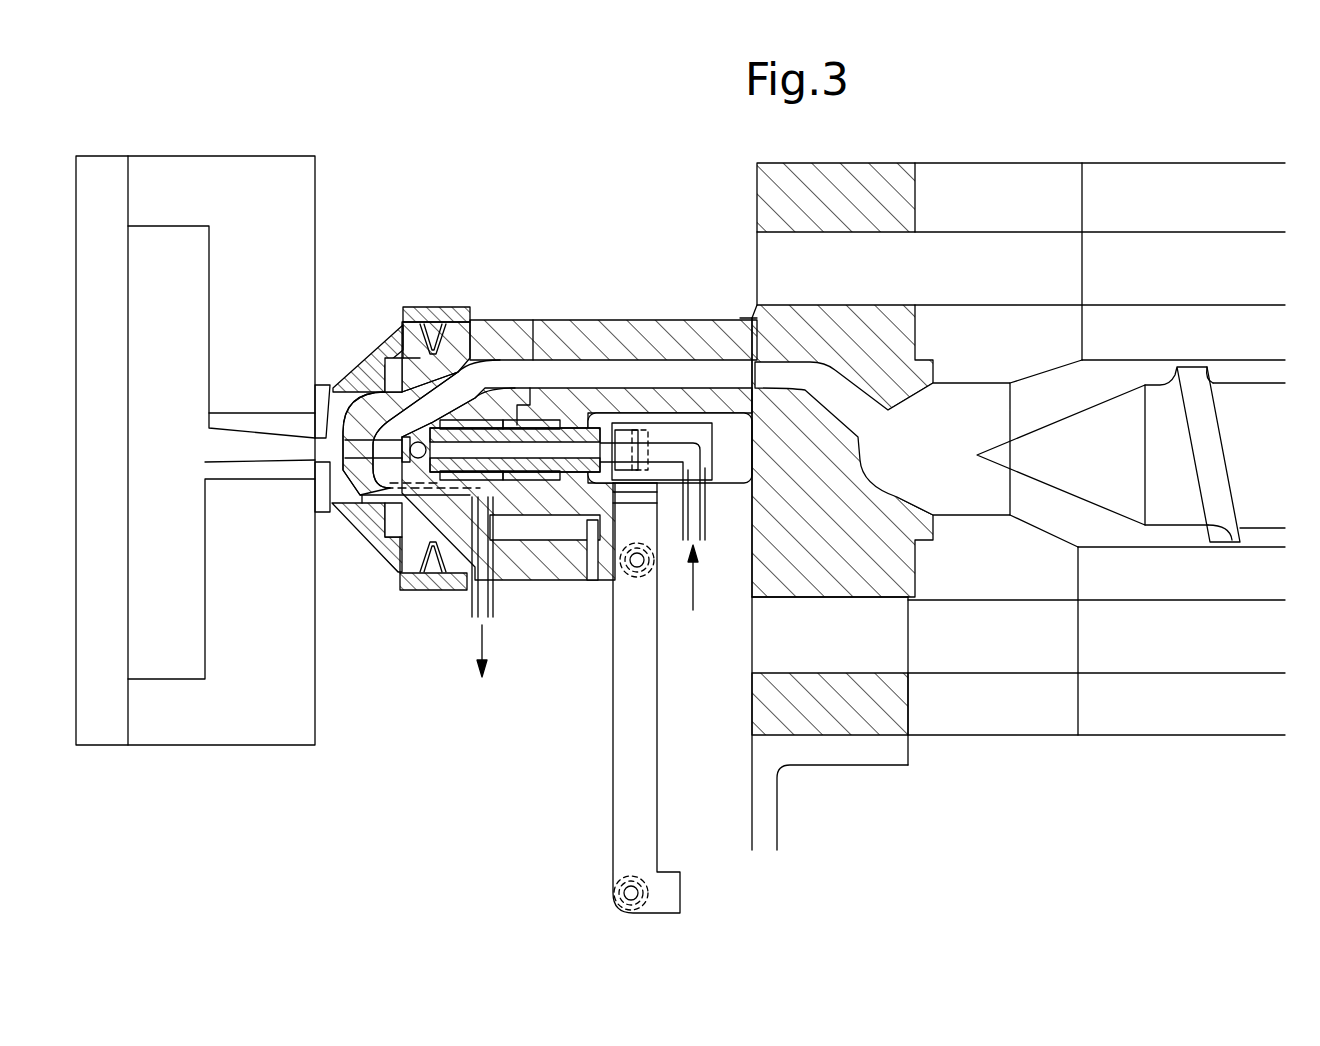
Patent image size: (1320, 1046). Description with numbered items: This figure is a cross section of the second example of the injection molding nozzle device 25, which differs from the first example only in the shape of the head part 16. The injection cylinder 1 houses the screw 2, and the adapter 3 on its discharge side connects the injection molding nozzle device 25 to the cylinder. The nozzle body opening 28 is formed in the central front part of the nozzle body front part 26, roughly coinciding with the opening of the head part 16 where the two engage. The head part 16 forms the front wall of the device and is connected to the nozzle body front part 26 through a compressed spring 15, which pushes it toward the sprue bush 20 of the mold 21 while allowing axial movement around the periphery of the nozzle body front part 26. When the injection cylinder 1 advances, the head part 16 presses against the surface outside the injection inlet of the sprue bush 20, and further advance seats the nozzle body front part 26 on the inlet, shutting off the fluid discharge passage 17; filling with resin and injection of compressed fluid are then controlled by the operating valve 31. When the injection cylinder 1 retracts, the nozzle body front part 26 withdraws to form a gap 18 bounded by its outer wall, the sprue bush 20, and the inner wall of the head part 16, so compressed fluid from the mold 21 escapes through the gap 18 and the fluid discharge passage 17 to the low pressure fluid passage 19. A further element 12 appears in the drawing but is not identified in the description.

The injection cylinder 1 is at (1158, 735).
The screw 2 is at (1100, 485).
The adapter 3 is at (1023, 735).
The nozzle body 12 is at (470, 373).
The compressed spring 15 is at (436, 307).
The head part 16 is at (362, 525).
The fluid discharge passage 17 is at (387, 553).
The gap 18 is at (355, 400).
The low pressure fluid passage 19 is at (487, 598).
The sprue bush 20 is at (323, 397).
The mold 21 is at (268, 156).
The injection molding nozzle device 25 is at (760, 137).
The nozzle body front part 26 is at (483, 420).
The nozzle body opening 28 is at (345, 477).
The operating valve 31 is at (485, 420).